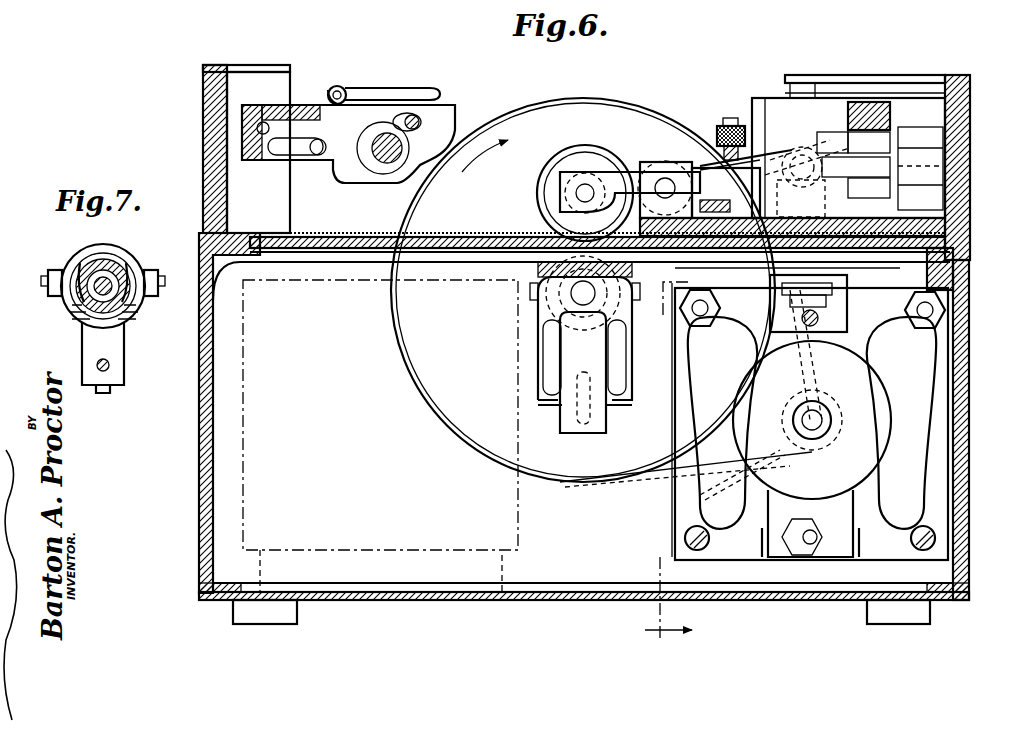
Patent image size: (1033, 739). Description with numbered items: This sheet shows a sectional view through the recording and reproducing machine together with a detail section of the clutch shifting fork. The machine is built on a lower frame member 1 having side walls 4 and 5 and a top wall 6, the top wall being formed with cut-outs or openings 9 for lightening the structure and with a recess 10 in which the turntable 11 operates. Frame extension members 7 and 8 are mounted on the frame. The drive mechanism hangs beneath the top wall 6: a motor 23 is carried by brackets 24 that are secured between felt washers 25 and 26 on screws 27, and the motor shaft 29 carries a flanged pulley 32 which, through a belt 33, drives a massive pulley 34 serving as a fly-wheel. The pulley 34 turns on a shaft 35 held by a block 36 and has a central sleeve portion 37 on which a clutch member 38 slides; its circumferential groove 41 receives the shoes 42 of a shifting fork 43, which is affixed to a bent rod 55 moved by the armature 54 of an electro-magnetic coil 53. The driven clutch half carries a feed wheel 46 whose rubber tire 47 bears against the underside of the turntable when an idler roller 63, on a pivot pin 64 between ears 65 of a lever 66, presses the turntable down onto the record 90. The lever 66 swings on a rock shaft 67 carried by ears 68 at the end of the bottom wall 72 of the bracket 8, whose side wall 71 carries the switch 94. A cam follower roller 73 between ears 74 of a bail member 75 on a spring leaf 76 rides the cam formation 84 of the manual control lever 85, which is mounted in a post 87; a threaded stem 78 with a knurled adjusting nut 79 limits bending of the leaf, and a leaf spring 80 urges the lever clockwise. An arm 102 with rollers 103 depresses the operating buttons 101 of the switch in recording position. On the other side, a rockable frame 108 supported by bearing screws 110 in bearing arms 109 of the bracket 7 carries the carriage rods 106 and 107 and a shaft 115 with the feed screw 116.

In FIG. 6, the lower frame member 1 is at (185, 430).
In FIG. 6, the side wall 4 is at (180, 474).
In FIG. 6, the side wall 5 is at (969, 482).
In FIG. 6, the top wall 6 is at (232, 262).
In FIG. 6, the frame extension member 7 is at (203, 121).
In FIG. 6, the frame extension member 8 is at (948, 167).
In FIG. 6, the cut-outs or openings 9 is at (300, 262).
In FIG. 6, the recess 10 is at (262, 248).
In FIG. 6, the turntable 11 is at (365, 248).
In FIG. 6, the motor 23 is at (670, 522).
In FIG. 6, the brackets 24 is at (770, 280).
In FIG. 6, the felt washer 25 is at (832, 285).
In FIG. 6, the felt washer 26 is at (826, 300).
In FIG. 6, the screws 27 is at (815, 335).
In FIG. 6, the motor shaft 29 is at (822, 420).
In FIG. 6, the flanged pulley 32 is at (806, 405).
In FIG. 6, the belt 33 is at (728, 470).
In FIG. 6, the pulley 34 is at (582, 482).
In FIG. 6, the shaft 35 is at (554, 357).
In FIG. 7, the shaft 35 is at (103, 276).
In FIG. 6, the block 36 is at (628, 300).
In FIG. 7, the central sleeve portion 37 is at (112, 268).
In FIG. 7, the clutch member 38 is at (80, 262).
In FIG. 7, the circumferential groove 41 is at (152, 270).
In FIG. 7, the shoes 42 is at (58, 270).
In FIG. 7, the shifting fork 43 is at (64, 322).
In FIG. 6, the feed wheel 46 is at (545, 318).
In FIG. 6, the rubber tire 47 is at (583, 372).
In FIG. 6, the electro-magnetic coil 53 is at (545, 392).
In FIG. 6, the armature 54 is at (565, 376).
In FIG. 6, the bent rod 55 is at (588, 395).
In FIG. 7, the bent rod 55 is at (110, 366).
In FIG. 6, the idler roller 63 is at (575, 172).
In FIG. 6, the pivot pin 64 is at (576, 191).
In FIG. 6, the ears 65 is at (568, 212).
In FIG. 6, the lever 66 is at (634, 160).
In FIG. 6, the rock shaft 67 is at (668, 182).
In FIG. 6, the ears 68 is at (645, 218).
In FIG. 6, the side wall 71 is at (960, 205).
In FIG. 6, the bottom wall 72 is at (865, 222).
In FIG. 6, the cam follower roller 73 is at (856, 166).
In FIG. 6, the ears 74 is at (832, 144).
In FIG. 6, the bail member 75 is at (869, 144).
In FIG. 6, the spring leaf 76 is at (802, 160).
In FIG. 6, the threaded stem 78 is at (731, 118).
In FIG. 6, the knurled adjusting nut 79 is at (720, 130).
In FIG. 6, the leaf spring 80 is at (801, 182).
In FIG. 6, the cam formation 84 is at (726, 193).
In FIG. 6, the manual control lever 85 is at (870, 115).
In FIG. 6, the post 87 is at (869, 187).
In FIG. 6, the record 90 is at (480, 190).
In FIG. 6, the switch 94 is at (950, 190).
In FIG. 6, the operating buttons 101 is at (920, 168).
In FIG. 6, the arm 102 is at (920, 171).
In FIG. 6, the rollers 103 is at (905, 182).
In FIG. 6, the rod 106 is at (326, 147).
In FIG. 6, the rod 107 is at (420, 123).
In FIG. 6, the rockable frame 108 is at (312, 95).
In FIG. 6, the bearing arms 109 is at (275, 191).
In FIG. 6, the bearing screws 110 is at (263, 122).
In FIG. 6, the shaft 115 is at (385, 175).
In FIG. 6, the feed screw 116 is at (378, 160).